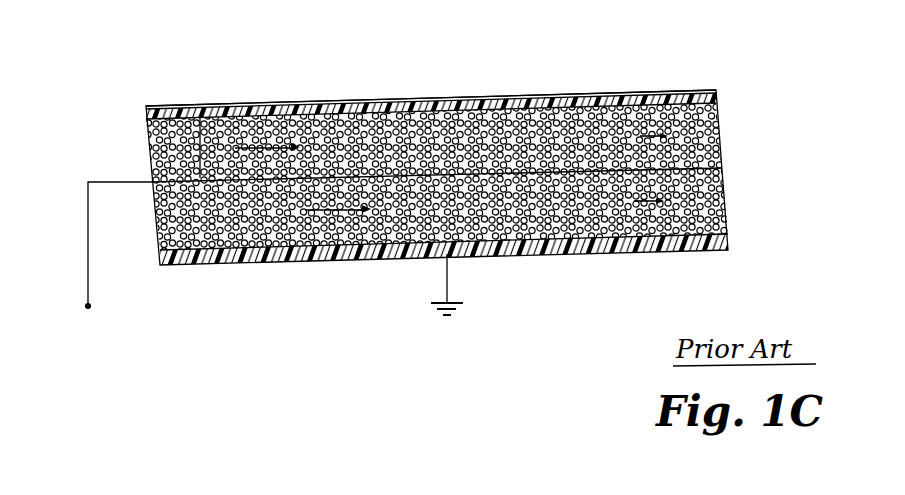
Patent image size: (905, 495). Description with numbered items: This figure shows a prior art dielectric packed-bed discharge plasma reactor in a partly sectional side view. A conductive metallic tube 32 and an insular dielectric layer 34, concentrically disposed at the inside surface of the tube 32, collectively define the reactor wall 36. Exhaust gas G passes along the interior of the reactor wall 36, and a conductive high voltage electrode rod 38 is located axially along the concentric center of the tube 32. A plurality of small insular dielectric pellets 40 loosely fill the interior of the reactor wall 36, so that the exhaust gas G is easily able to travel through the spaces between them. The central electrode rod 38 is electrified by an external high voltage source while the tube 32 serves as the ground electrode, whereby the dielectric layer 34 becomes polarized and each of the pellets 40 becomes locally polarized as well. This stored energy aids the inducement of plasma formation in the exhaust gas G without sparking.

The conductive metallic tube 32 is at (548, 86).
The insular dielectric layer 34 is at (447, 90).
The reactor wall 36 is at (357, 78).
The high voltage electrode rod 38 is at (192, 107).
The insular dielectric pellets 40 is at (630, 104).
The exhaust gas G is at (266, 142).